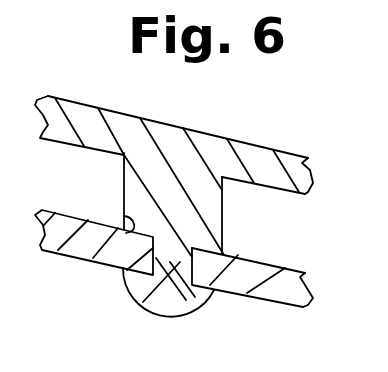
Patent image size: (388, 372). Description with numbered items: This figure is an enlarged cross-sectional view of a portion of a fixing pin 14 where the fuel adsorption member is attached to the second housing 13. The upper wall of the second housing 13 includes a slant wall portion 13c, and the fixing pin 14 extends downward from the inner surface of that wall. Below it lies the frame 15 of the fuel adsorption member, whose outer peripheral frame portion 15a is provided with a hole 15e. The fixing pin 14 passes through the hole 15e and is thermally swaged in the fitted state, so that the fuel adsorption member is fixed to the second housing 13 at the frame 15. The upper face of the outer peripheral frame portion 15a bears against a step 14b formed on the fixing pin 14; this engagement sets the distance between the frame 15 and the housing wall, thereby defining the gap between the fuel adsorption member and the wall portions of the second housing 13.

The second housing 13 is at (115, 111).
The slant wall portion 13c is at (289, 160).
The fixing pin 14 is at (218, 210).
The step 14b is at (119, 233).
The frame 15 is at (265, 301).
The outer peripheral frame portion 15a is at (289, 273).
The hole 15e is at (147, 308).